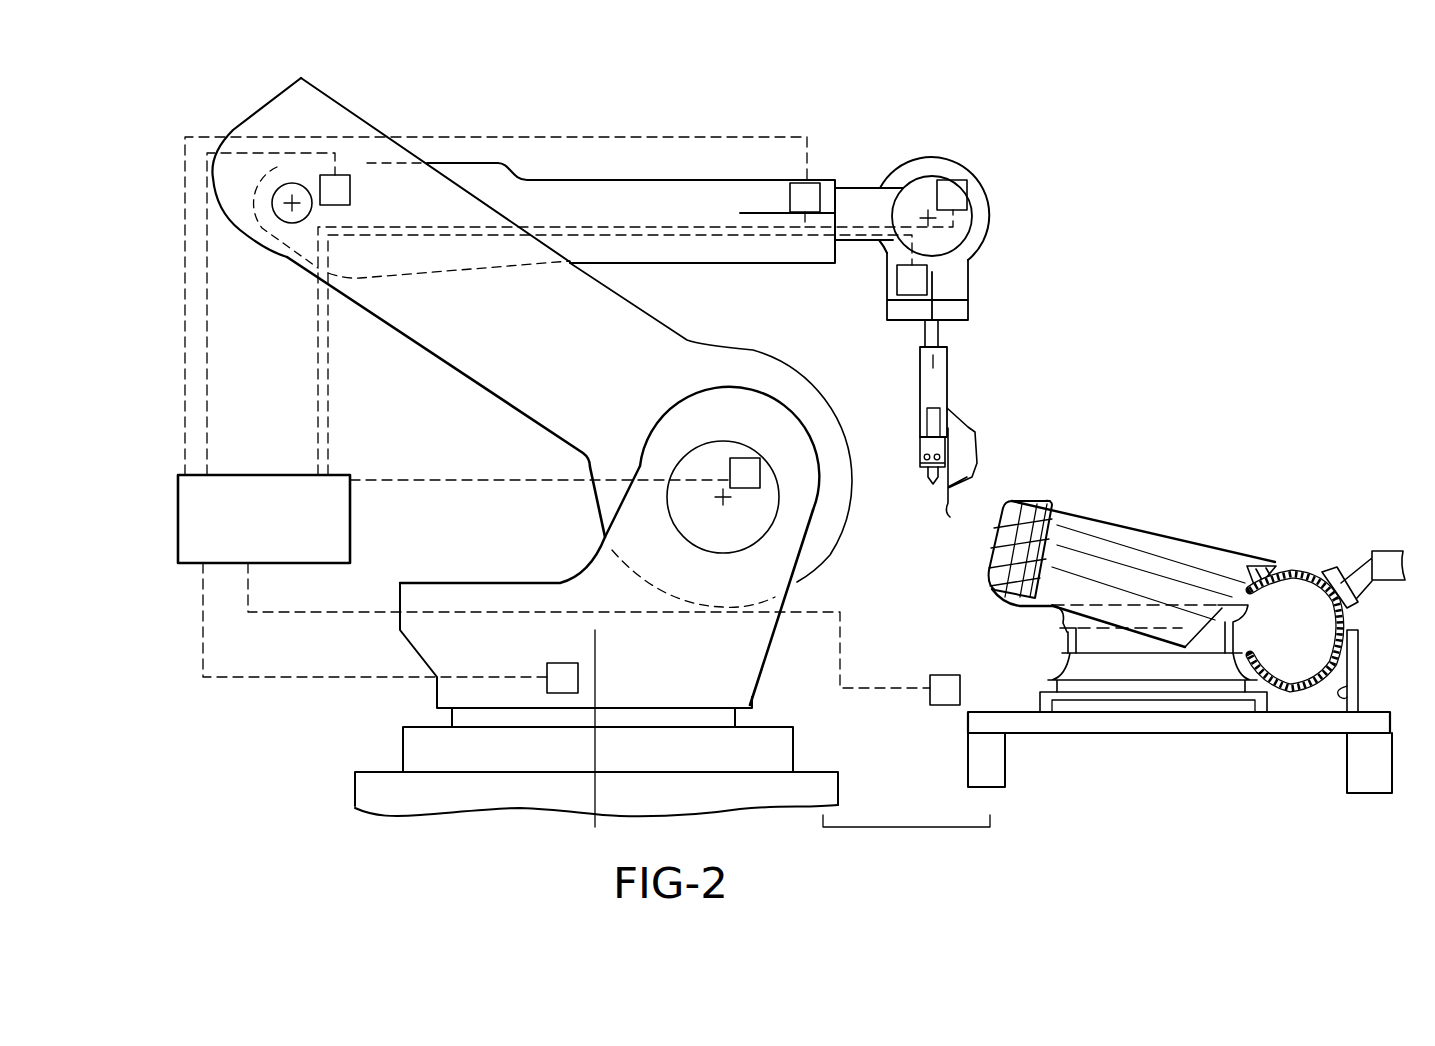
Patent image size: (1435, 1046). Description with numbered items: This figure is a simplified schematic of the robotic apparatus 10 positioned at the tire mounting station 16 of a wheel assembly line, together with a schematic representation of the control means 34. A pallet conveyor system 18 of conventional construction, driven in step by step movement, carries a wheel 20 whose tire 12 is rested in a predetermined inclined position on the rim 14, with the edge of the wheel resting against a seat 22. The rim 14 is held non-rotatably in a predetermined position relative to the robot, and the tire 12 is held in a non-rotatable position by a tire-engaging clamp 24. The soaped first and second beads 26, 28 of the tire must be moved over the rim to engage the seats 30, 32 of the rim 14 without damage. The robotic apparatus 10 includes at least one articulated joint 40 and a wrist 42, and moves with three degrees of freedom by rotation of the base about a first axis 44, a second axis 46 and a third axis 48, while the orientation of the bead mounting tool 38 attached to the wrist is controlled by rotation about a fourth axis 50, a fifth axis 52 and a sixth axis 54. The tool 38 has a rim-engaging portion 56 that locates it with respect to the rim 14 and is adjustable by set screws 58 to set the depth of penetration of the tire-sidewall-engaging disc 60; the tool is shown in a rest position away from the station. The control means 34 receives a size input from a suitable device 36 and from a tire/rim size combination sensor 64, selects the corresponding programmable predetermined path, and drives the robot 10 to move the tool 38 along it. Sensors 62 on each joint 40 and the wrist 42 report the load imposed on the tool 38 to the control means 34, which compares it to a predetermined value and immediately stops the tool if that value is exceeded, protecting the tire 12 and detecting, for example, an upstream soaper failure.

The robotic apparatus 10 is at (437, 373).
The tire 12 is at (1058, 612).
The rim 14 is at (1058, 668).
The tire mounting station 16 is at (1310, 512).
The pallet conveyor system 18 is at (1160, 732).
The wheel 20 is at (1093, 508).
The seat 22 is at (1347, 707).
The tire-engaging clamp 24 is at (1337, 570).
The first bead 26 is at (1247, 657).
The second bead 28 is at (1257, 585).
The rim seat 30 is at (1037, 688).
The rim seat 32 is at (1047, 622).
The control means 34 is at (352, 530).
The input device 36 is at (925, 698).
The bead mounting tool 38 is at (1045, 397).
The articulated joint 40 is at (303, 228).
The wrist 42 is at (993, 220).
The first axis 44 is at (597, 687).
The second axis 46 is at (723, 497).
The third axis 48 is at (292, 203).
The fourth axis 50 is at (847, 213).
The fifth axis 52 is at (928, 218).
The sixth axis 54 is at (968, 297).
The rim-engaging portion 56 is at (932, 484).
The set screws 58 is at (923, 455).
The tire-sidewall-engaging disc 60 is at (947, 510).
The load sensors 62 is at (350, 195).
The tire/rim size combination sensor 64 is at (940, 707).